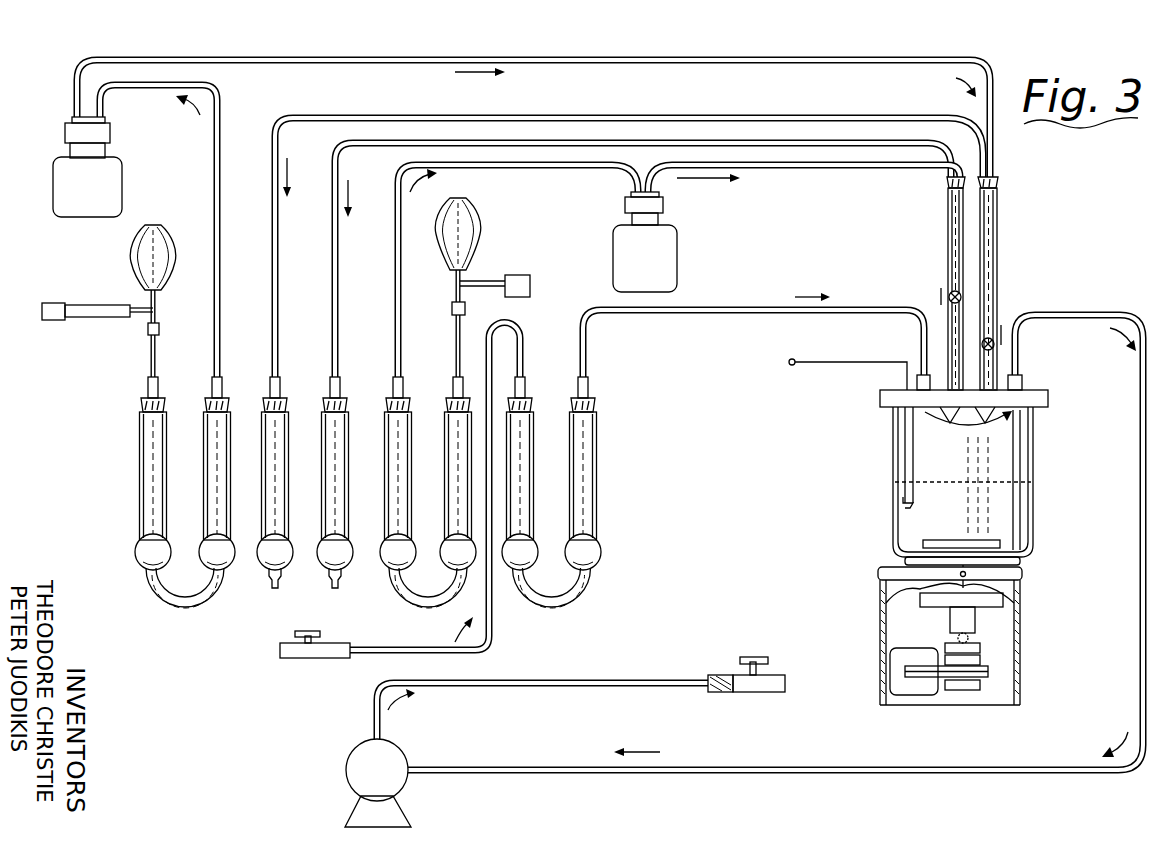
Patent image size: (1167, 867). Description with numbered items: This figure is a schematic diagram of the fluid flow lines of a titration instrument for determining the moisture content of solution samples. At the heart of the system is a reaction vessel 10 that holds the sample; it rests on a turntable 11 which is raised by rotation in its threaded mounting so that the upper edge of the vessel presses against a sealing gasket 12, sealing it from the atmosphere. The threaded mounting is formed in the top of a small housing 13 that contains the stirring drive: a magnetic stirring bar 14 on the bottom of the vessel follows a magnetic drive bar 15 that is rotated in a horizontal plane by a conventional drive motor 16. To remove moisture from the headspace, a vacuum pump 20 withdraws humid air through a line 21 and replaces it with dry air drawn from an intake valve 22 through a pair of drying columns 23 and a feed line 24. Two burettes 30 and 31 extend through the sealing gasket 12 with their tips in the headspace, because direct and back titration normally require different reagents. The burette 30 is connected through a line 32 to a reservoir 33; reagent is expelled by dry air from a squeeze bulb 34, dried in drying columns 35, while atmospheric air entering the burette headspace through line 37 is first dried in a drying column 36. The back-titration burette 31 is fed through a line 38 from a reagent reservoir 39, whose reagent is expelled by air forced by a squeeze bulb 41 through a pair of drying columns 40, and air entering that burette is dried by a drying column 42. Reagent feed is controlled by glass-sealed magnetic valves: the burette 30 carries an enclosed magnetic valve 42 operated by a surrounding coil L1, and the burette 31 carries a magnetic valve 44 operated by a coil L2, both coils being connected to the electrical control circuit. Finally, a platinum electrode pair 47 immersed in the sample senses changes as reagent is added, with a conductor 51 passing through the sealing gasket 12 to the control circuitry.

The reaction vessel 10 is at (1035, 505).
The turntable 11 is at (1022, 563).
The sealing gasket 12 is at (1050, 398).
The housing 13 is at (1020, 648).
The magnetic stirring bar 14 is at (922, 544).
The magnetic drive bar 15 is at (890, 600).
The drive motor 16 is at (996, 685).
The vacuum pump 20 is at (409, 790).
The line 21 is at (1076, 314).
The intake valve 22 is at (292, 659).
The drying columns 23 is at (568, 425).
The feed line 24 is at (690, 314).
The burette 30 is at (998, 240).
The burette 31 is at (947, 245).
The line 32 is at (995, 158).
The reservoir 33 is at (122, 176).
The squeeze bulb 34 is at (132, 254).
The drying columns 35 is at (198, 435).
The drying column 36 is at (262, 432).
The line 37 is at (917, 116).
The line 38 is at (795, 172).
The reagent reservoir 39 is at (677, 245).
The drying columns 40 is at (447, 425).
The squeeze bulb 41 is at (480, 228).
The drying column / magnetic valve 42 is at (347, 432).
The magnetic valve 44 is at (950, 294).
The platinum electrode pair 47 is at (900, 495).
The conductor 51 is at (815, 366).
The coil L1 is at (1002, 333).
The coil L2 is at (940, 297).